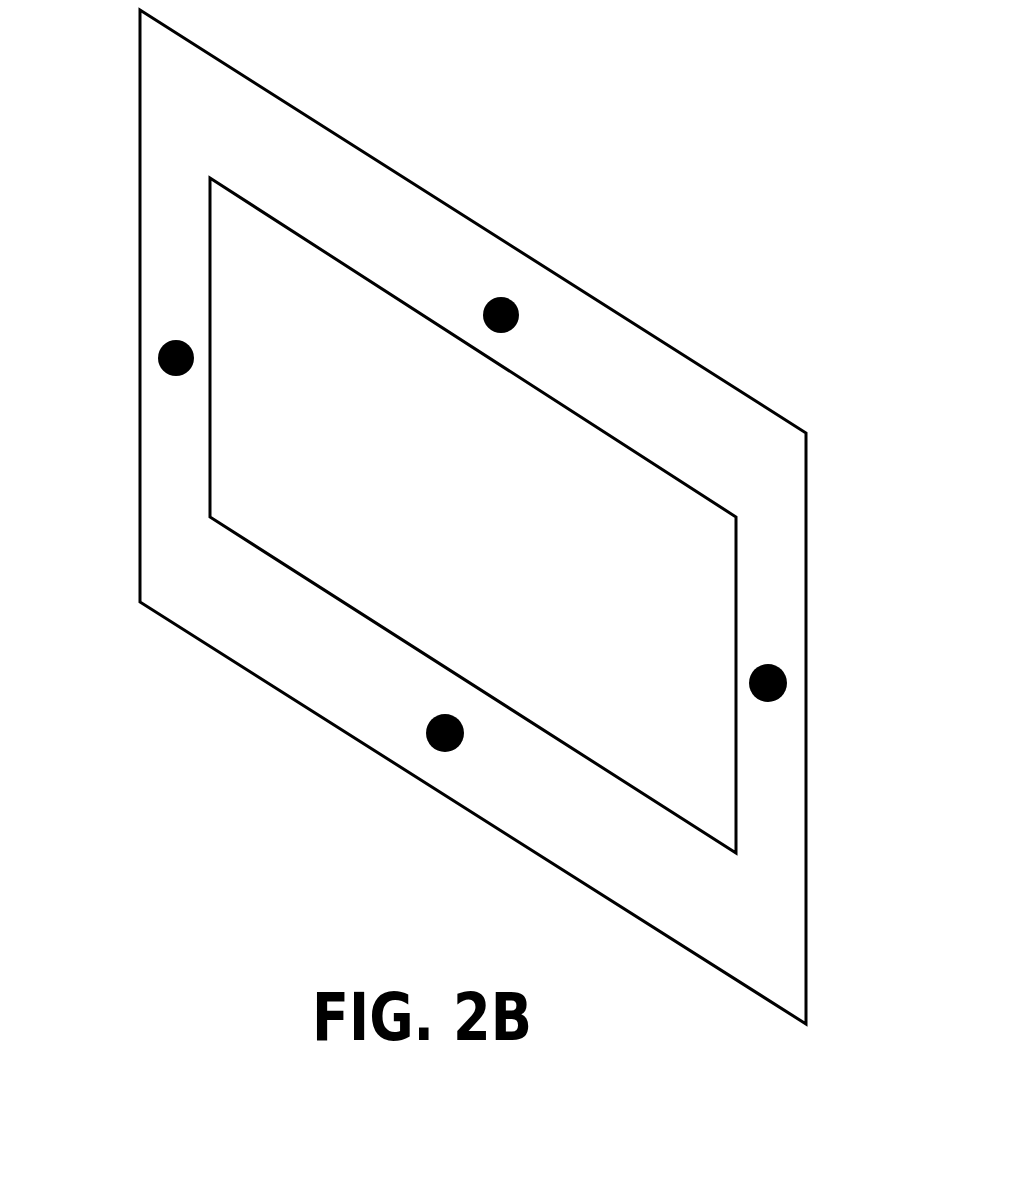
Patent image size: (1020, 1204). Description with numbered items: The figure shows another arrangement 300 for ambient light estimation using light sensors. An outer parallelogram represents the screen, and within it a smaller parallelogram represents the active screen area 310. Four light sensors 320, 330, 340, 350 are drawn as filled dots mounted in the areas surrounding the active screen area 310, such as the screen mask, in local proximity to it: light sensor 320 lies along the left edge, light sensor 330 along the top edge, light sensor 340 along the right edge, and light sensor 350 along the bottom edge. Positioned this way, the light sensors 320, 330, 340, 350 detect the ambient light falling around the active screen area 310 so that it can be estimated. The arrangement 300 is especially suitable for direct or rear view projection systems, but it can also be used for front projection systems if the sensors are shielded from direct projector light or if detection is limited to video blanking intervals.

The arrangement 300 is at (552, 77).
The active screen area 310 is at (478, 525).
The light sensor 320 is at (166, 326).
The light sensor 330 is at (512, 283).
The light sensor 340 is at (779, 650).
The light sensor 350 is at (404, 738).